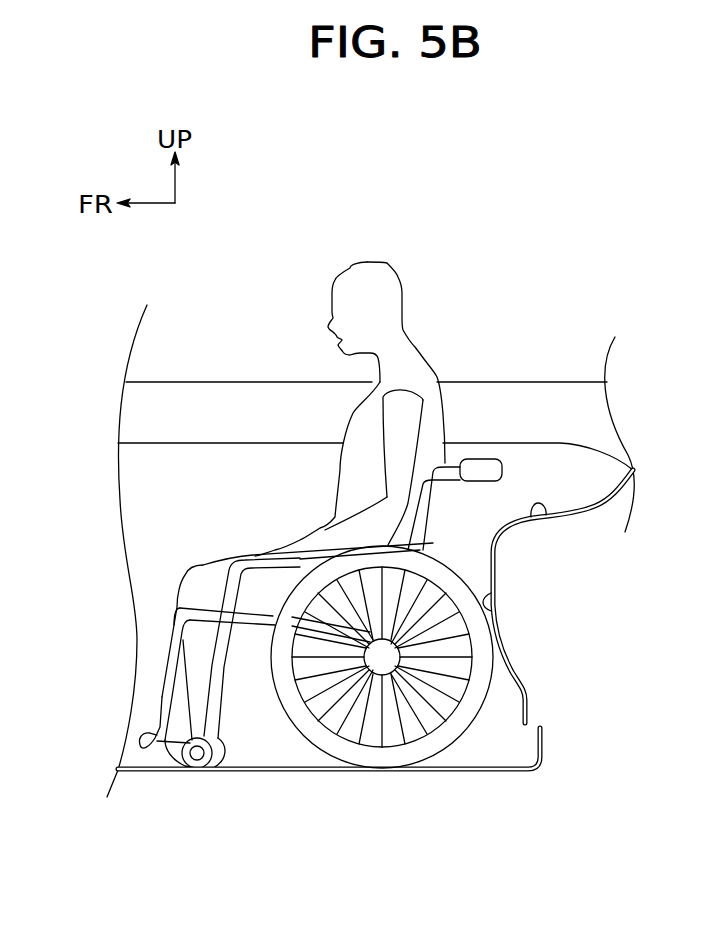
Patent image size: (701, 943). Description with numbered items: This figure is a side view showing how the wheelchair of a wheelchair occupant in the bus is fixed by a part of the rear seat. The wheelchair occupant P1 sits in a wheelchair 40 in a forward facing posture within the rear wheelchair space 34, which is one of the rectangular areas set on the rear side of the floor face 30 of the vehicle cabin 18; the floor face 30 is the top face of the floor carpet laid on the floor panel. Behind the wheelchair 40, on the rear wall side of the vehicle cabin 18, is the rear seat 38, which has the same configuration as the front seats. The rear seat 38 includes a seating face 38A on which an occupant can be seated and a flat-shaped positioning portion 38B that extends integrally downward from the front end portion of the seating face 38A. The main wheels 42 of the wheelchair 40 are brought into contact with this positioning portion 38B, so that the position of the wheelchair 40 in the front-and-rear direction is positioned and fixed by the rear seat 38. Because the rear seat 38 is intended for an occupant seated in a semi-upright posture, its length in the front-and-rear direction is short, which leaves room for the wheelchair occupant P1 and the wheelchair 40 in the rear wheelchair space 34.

The vehicle cabin 18 is at (286, 339).
The wheelchair occupant P1 is at (387, 285).
The floor face 30 is at (253, 766).
The rear wheelchair space 34 is at (311, 766).
The rear seat 38 is at (581, 503).
The seating face 38A is at (546, 517).
The positioning portion 38B is at (497, 614).
The wheelchair 40 is at (430, 517).
The main wheels 42 is at (447, 737).